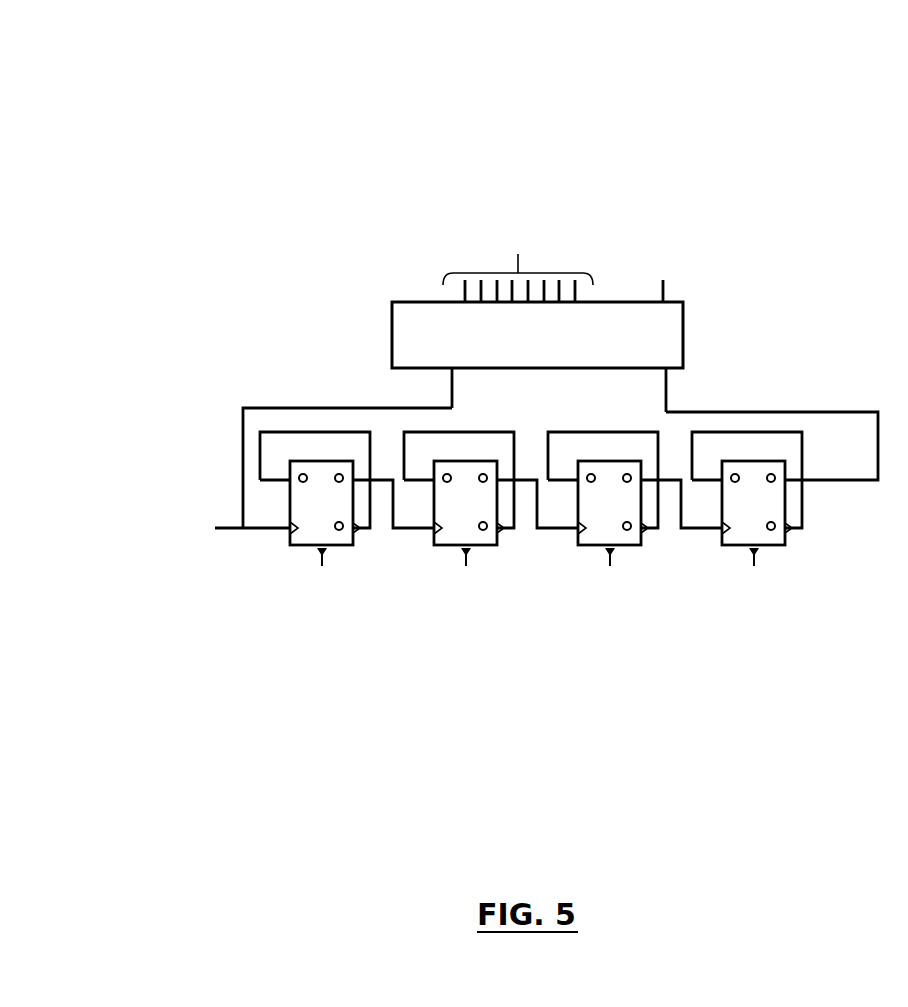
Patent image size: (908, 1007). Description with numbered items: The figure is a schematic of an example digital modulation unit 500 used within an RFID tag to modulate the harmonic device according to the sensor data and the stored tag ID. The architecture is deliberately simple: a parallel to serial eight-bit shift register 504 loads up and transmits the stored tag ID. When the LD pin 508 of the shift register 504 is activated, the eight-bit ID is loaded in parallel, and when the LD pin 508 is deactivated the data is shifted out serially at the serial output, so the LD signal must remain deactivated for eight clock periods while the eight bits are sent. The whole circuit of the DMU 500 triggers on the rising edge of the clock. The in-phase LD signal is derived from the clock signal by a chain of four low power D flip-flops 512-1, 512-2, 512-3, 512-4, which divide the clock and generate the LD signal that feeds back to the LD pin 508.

The digital modulation unit 500 is at (146, 41).
The parallel to serial 8-bit shift register 504 is at (430, 302).
The LD pin 508 is at (666, 390).
The D flip-flop 512-1 is at (308, 547).
The D flip-flop 512-2 is at (452, 547).
The D flip-flop 512-3 is at (596, 547).
The D flip-flop 512-4 is at (740, 547).